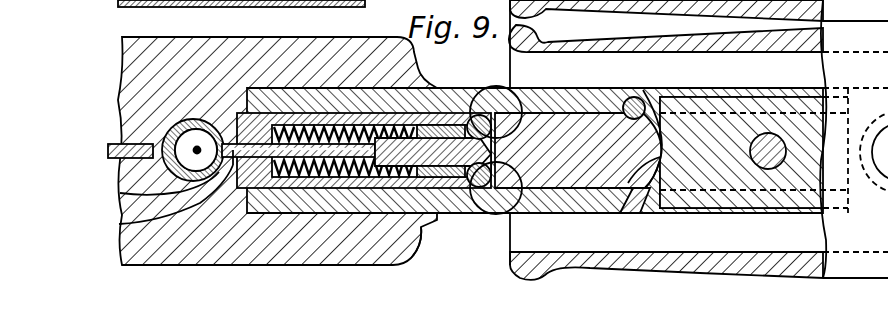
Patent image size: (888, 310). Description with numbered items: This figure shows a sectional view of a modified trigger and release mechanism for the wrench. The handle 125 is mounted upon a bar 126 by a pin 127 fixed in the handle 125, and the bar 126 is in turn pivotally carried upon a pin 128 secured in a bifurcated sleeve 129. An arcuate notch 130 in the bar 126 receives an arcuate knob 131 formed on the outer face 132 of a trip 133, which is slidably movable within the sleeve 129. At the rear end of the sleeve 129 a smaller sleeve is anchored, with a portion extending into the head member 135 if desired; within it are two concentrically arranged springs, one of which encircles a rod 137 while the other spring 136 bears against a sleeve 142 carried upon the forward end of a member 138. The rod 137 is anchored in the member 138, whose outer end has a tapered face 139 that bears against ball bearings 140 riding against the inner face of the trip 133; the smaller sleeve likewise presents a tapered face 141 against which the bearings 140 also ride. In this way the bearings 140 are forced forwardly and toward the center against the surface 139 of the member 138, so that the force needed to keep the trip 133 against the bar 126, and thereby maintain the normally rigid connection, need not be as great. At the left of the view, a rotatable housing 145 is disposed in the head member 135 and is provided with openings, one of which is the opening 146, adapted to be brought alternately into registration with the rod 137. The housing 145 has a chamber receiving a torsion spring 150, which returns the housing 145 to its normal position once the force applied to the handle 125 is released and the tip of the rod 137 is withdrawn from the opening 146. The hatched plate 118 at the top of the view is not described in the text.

The cover plate 118 is at (366, 24).
The handle 125 is at (790, 38).
The bar 126 is at (738, 79).
The pin 127 is at (222, 125).
The pin 128 is at (782, 150).
The bifurcated sleeve 129 is at (640, 80).
The arcuate notch 130 is at (307, 113).
The arcuate knob 131 is at (628, 239).
The outer face 132 is at (682, 77).
The trip 133 is at (572, 128).
The head member 135 is at (275, 29).
The spring 136 is at (327, 188).
The rod 137 is at (233, 160).
The member 138 is at (407, 190).
The tapered face 139 is at (500, 128).
The ball bearings 140 is at (486, 115).
The tapered face 141 is at (457, 118).
The sleeve 142 is at (443, 113).
The rotatable housing 145 is at (120, 194).
The opening 146 is at (119, 223).
The torsion spring 150 is at (195, 149).